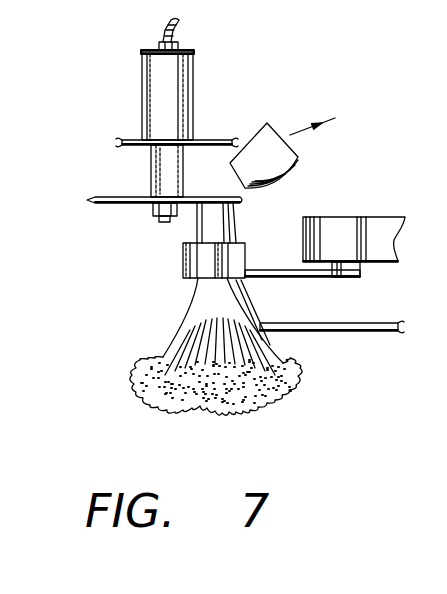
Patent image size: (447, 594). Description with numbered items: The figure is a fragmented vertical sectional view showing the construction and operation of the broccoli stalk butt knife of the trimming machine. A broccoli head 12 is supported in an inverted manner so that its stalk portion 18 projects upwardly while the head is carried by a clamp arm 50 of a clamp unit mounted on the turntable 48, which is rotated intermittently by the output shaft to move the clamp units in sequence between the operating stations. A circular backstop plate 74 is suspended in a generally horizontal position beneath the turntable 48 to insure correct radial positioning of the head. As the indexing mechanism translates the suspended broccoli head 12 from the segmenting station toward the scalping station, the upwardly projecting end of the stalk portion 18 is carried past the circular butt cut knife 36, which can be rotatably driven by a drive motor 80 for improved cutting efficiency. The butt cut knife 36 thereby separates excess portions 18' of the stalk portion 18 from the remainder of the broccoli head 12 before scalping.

The broccoli head 12 is at (171, 335).
The stalk portion 18 is at (229, 234).
The excess portions 18' is at (309, 153).
The butt cut knife 36 is at (120, 197).
The turntable 48 is at (370, 223).
The clamp arms 50 is at (296, 278).
The backstop plate 74 is at (327, 333).
The drive motor 80 is at (170, 95).